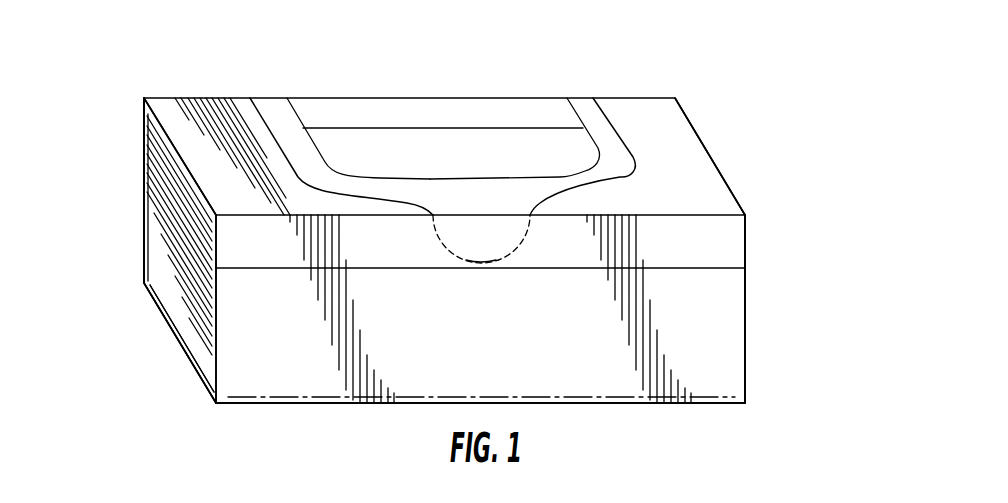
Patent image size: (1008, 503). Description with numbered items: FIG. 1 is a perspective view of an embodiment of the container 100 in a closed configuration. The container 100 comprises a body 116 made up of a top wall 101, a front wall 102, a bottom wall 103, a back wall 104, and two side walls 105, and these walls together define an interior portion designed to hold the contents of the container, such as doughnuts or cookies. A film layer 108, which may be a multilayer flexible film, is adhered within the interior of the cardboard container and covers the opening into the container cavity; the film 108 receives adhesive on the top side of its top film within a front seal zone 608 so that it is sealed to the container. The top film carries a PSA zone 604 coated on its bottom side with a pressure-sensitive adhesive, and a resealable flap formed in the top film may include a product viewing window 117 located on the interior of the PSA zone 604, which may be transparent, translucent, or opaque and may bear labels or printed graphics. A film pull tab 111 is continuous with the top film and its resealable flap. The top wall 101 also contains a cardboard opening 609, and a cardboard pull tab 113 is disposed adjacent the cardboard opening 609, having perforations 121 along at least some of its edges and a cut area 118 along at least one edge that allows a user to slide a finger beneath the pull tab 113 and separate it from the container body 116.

The container 100 is at (790, 85).
The top wall 101 is at (713, 180).
The front wall 102 is at (700, 316).
The bottom wall 103 is at (688, 408).
The back wall 104 is at (128, 126).
The side walls 105 is at (155, 240).
The film layer 108 is at (492, 162).
The film pull tab 111 is at (413, 238).
The cardboard pull tab 113 is at (440, 245).
The body 116 is at (145, 335).
The product viewing window 117 is at (447, 153).
The cut area 118 is at (490, 262).
The perforations 121 is at (475, 250).
The PSA zone 604 is at (615, 162).
The front seal zone 608 is at (232, 243).
The cardboard opening 609 is at (186, 120).